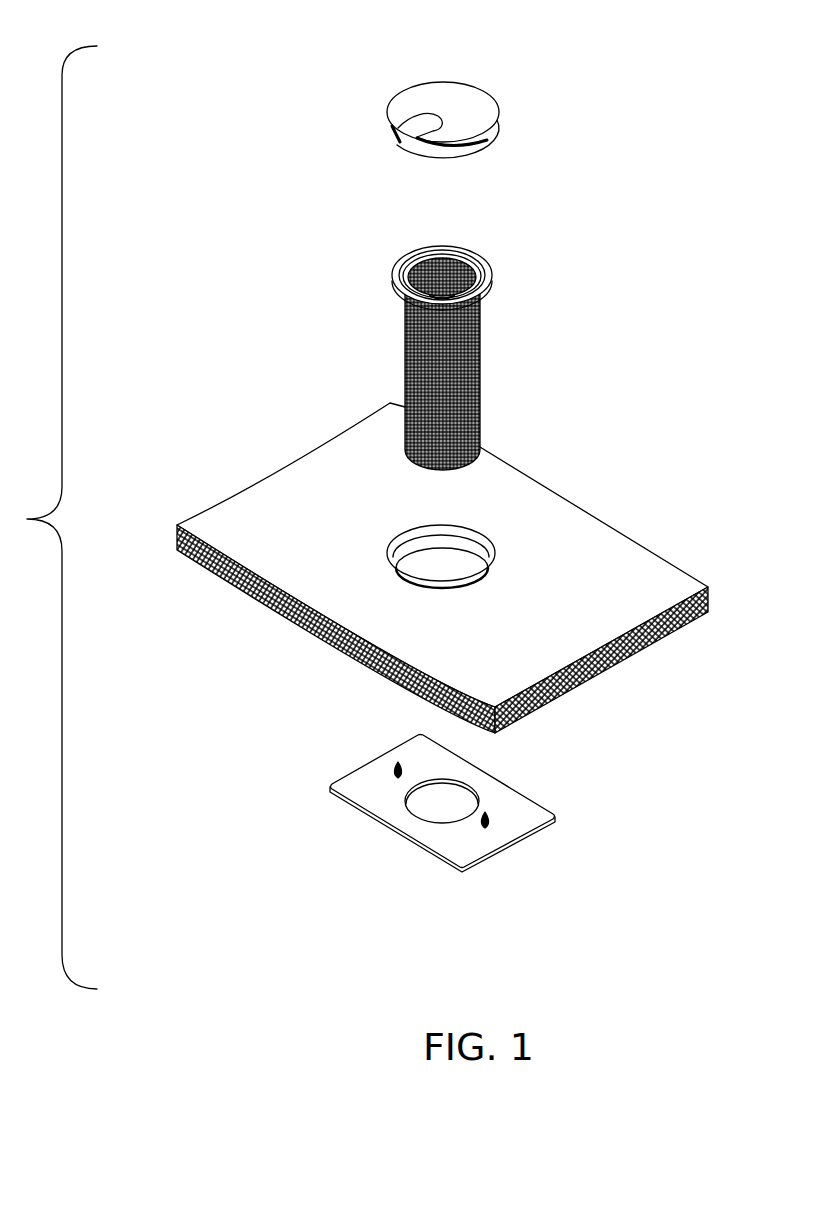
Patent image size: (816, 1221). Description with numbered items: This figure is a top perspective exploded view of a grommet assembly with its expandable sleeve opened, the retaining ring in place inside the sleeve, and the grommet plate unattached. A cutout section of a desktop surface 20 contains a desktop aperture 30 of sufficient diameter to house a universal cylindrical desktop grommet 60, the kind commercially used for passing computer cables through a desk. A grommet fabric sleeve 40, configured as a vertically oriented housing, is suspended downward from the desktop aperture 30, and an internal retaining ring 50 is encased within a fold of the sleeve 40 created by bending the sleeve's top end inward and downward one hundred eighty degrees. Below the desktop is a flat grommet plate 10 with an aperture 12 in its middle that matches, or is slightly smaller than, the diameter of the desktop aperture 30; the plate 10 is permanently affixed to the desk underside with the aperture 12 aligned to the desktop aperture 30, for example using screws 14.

The grommet flat plate 10 is at (492, 857).
The aperture 12 is at (442, 808).
The screws 14 is at (483, 822).
The desktop surface 20 is at (538, 710).
The desktop aperture 30 is at (442, 562).
The grommet fabric sleeve 40 is at (480, 370).
The internal retaining ring 50 is at (492, 263).
The universal cylindrical desktop grommet 60 is at (483, 87).